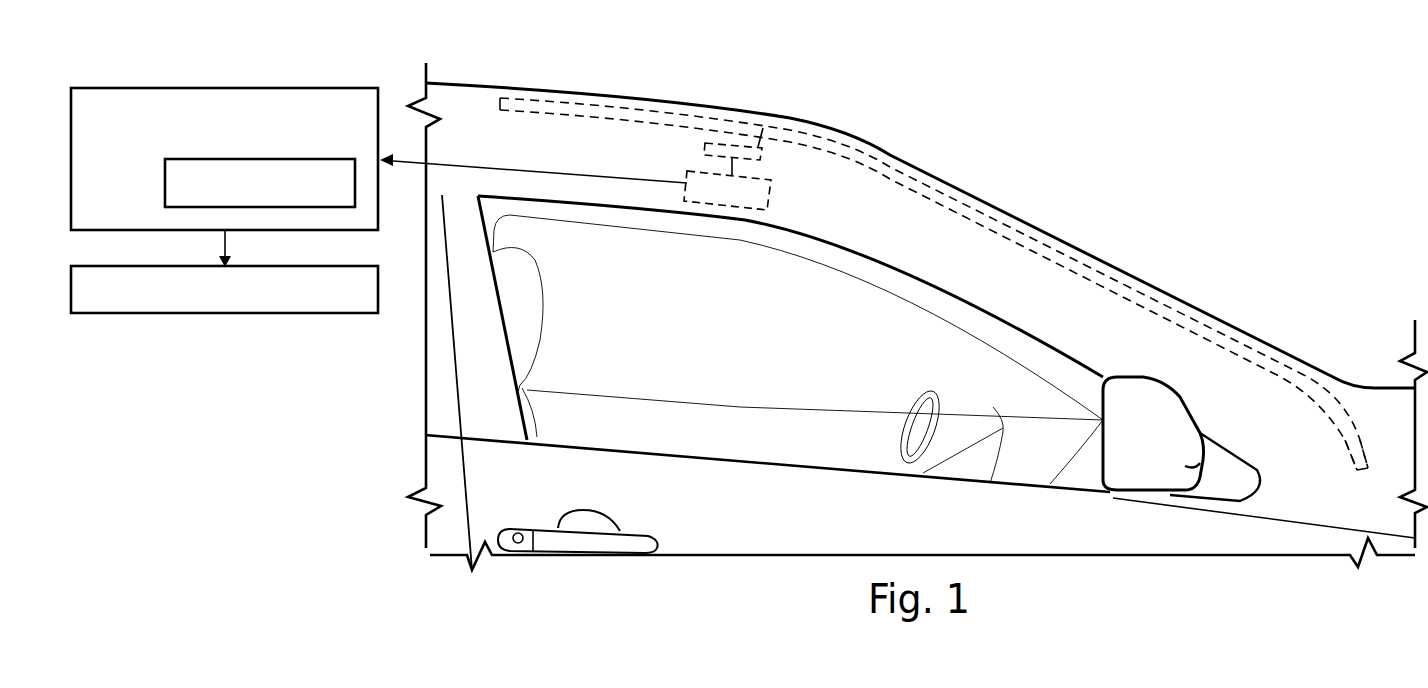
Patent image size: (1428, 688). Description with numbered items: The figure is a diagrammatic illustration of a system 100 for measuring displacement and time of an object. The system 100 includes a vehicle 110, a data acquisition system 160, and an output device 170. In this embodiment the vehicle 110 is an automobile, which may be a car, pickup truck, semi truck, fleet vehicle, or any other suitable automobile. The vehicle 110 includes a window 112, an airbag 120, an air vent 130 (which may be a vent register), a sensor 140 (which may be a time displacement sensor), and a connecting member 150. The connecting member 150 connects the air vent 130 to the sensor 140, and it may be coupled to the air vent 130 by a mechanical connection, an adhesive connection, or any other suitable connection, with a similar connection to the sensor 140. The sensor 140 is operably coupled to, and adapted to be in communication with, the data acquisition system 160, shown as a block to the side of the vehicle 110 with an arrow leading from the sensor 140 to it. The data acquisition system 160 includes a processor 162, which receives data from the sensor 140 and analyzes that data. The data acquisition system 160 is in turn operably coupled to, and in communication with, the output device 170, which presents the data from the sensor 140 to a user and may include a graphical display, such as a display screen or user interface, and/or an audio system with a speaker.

The system 100 is at (917, 294).
The vehicle 110 is at (476, 80).
The window 112 is at (1060, 353).
The airbag 120 is at (1348, 437).
The air vent 130 is at (763, 127).
The sensor 140 is at (772, 195).
The connecting member 150 is at (727, 172).
The data acquisition system 160 is at (212, 88).
The processor 162 is at (165, 182).
The output device 170 is at (213, 313).